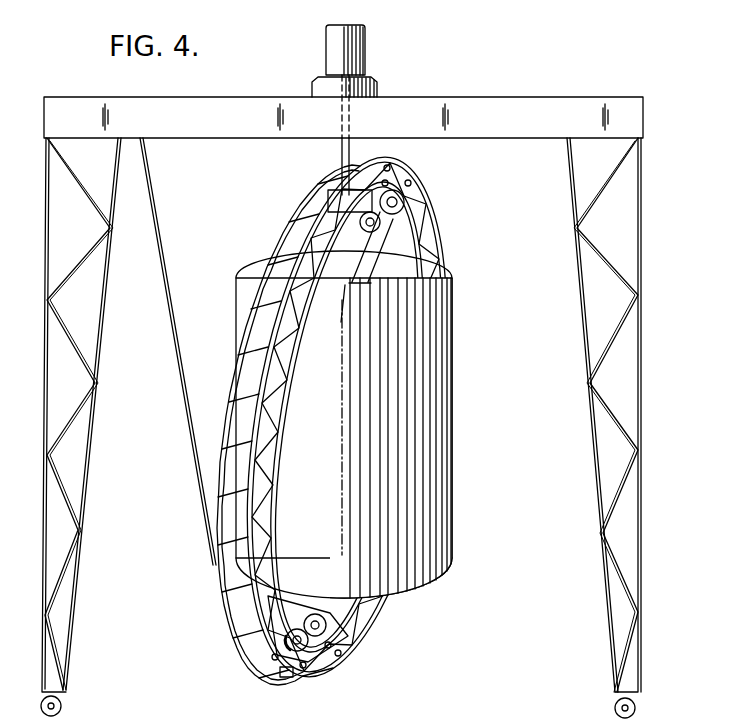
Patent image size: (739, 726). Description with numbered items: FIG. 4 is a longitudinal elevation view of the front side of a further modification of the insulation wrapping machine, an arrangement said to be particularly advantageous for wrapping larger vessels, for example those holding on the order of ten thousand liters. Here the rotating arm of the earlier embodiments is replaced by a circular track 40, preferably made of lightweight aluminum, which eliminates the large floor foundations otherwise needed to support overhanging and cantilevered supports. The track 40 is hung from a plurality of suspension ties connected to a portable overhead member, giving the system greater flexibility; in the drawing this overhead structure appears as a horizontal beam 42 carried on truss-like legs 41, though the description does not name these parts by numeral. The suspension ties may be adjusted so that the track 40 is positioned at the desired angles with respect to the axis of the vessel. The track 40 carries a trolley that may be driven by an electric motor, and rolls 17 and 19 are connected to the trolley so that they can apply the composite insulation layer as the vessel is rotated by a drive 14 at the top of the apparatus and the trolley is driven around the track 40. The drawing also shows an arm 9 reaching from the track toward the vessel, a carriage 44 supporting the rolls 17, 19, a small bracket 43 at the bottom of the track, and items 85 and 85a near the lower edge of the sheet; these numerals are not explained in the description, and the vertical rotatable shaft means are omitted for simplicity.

The drive 14 is at (357, 50).
The cross beam 42 is at (219, 84).
The support leg 41 is at (170, 308).
The circular track 40 is at (223, 606).
The arm 9 is at (360, 292).
The carriage 44 is at (305, 606).
The roll 17 is at (295, 634).
The roll 19 is at (327, 614).
The bracket 43 is at (290, 678).
The guide roller 85 is at (376, 718).
The guide roller 85a is at (291, 718).